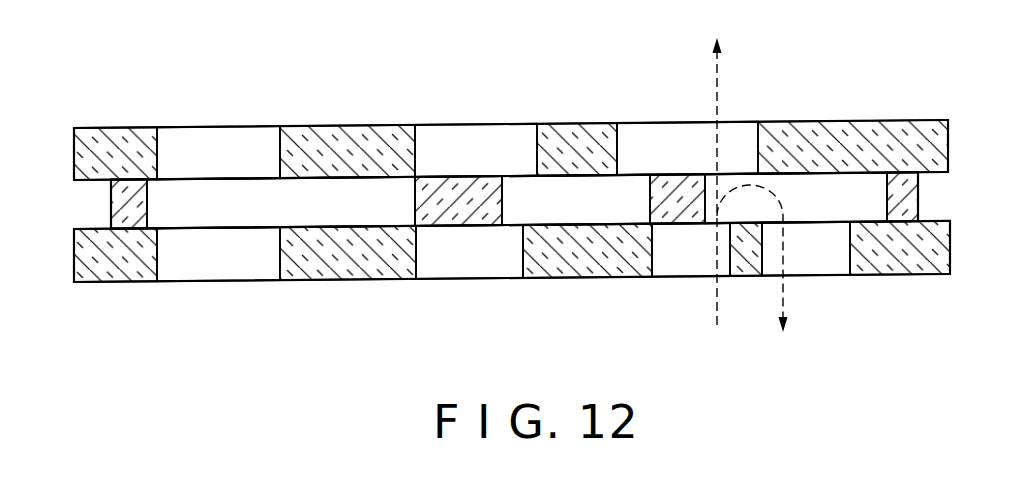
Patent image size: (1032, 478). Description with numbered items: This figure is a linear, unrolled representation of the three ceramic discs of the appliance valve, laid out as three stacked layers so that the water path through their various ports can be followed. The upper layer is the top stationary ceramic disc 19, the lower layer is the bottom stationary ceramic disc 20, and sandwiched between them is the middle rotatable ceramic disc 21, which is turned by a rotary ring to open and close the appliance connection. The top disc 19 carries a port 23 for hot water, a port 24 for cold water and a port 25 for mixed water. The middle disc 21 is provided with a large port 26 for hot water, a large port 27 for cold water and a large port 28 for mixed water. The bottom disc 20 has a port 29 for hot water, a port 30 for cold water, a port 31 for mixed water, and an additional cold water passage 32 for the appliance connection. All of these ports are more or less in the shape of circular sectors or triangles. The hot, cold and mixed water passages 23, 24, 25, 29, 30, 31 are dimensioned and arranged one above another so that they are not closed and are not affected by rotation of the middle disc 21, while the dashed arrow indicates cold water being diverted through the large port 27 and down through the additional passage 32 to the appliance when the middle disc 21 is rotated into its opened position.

The top stationary ceramic disc 19 is at (107, 127).
The bottom stationary ceramic disc 20 is at (118, 284).
The middle rotatable ceramic disc 21 is at (110, 203).
The port for hot water 23 is at (442, 140).
The port for cold water 24 is at (640, 142).
The port for mixed water 25 is at (258, 145).
The large port for hot water 26 is at (527, 183).
The large port for cold water 27 is at (712, 187).
The large port for mixed water 28 is at (198, 197).
The port for hot water 29 is at (463, 262).
The port for cold water 30 is at (680, 258).
The port for mixed water 31 is at (235, 267).
The additional cold water passage 32 is at (808, 263).